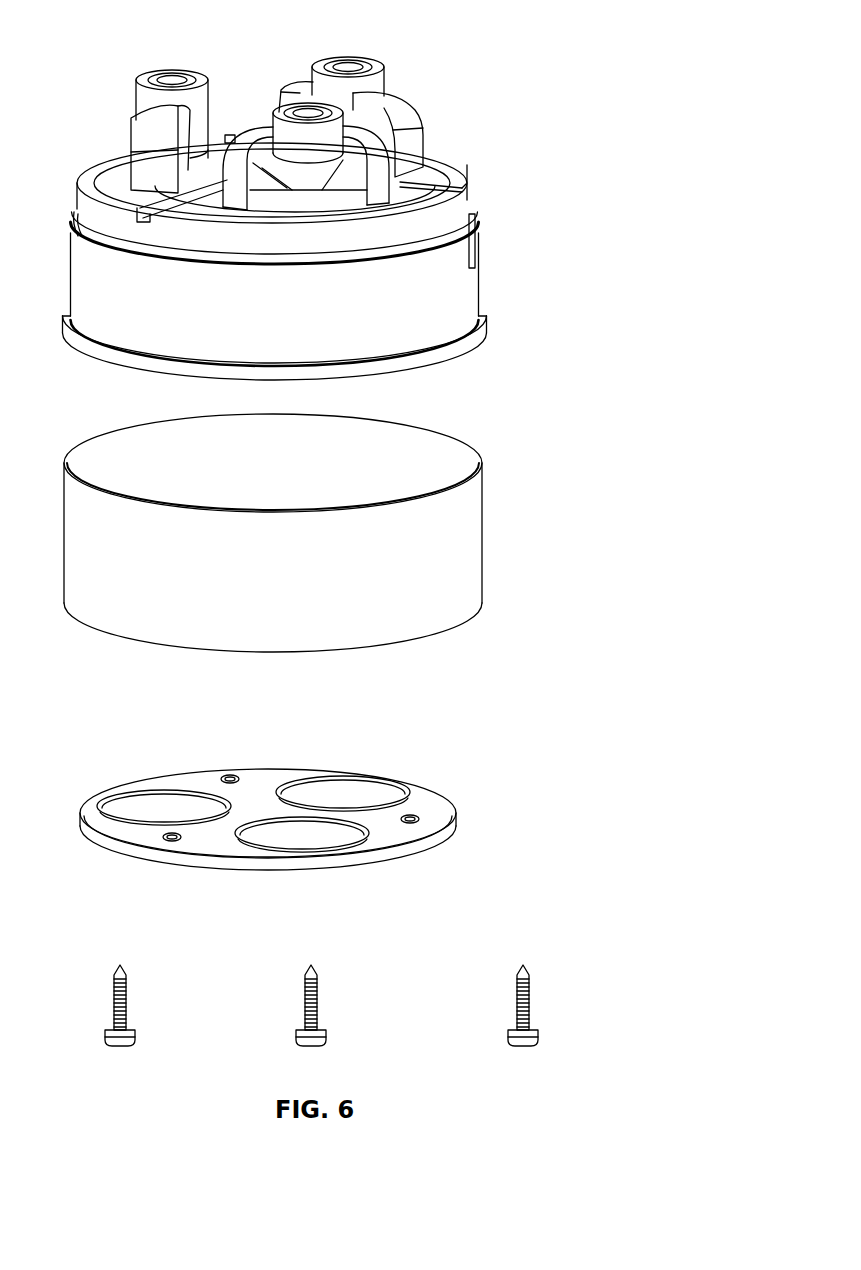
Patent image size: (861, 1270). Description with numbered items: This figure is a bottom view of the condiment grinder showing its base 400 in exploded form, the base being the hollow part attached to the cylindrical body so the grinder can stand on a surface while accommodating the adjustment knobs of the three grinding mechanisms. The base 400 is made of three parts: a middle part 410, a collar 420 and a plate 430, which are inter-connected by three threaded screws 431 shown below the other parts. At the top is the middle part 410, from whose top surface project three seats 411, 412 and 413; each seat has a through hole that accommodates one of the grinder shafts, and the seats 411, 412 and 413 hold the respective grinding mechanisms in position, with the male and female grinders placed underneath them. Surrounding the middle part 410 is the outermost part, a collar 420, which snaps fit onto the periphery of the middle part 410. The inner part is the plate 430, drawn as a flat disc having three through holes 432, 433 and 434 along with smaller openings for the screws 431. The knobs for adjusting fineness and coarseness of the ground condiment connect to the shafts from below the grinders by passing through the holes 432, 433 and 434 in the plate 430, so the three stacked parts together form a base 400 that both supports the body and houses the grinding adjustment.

The base 400 is at (466, 52).
The middle part 410 is at (458, 302).
The seat 411 is at (407, 118).
The seat 412 is at (430, 152).
The seat 413 is at (145, 98).
The collar 420 is at (452, 565).
The plate 430 is at (289, 813).
The threaded screws 431 is at (112, 997).
The through hole 432 is at (140, 790).
The through hole 433 is at (367, 837).
The through hole 434 is at (343, 777).